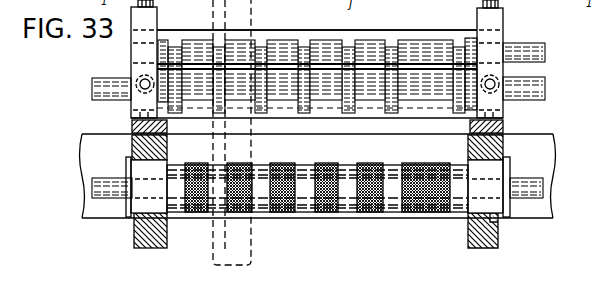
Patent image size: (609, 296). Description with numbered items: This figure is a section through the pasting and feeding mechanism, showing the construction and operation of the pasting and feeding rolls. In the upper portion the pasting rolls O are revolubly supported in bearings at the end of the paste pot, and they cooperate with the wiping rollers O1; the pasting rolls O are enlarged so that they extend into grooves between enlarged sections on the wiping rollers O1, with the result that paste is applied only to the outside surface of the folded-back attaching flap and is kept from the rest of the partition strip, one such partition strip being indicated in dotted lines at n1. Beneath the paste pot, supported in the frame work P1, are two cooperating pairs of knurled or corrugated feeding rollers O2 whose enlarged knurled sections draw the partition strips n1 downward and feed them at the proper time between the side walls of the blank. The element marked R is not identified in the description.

The pasting rolls O is at (175, 78).
The wiping rollers O1 is at (292, 45).
The knurled or corrugated feeding rollers O2 is at (325, 213).
The frame bar R is at (440, 32).
The frame work P1 is at (392, 214).
The partition strip n1 is at (232, 255).